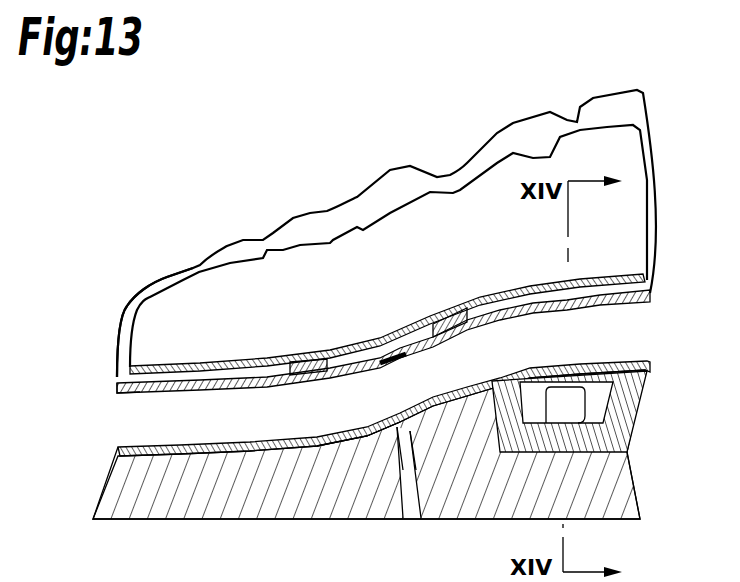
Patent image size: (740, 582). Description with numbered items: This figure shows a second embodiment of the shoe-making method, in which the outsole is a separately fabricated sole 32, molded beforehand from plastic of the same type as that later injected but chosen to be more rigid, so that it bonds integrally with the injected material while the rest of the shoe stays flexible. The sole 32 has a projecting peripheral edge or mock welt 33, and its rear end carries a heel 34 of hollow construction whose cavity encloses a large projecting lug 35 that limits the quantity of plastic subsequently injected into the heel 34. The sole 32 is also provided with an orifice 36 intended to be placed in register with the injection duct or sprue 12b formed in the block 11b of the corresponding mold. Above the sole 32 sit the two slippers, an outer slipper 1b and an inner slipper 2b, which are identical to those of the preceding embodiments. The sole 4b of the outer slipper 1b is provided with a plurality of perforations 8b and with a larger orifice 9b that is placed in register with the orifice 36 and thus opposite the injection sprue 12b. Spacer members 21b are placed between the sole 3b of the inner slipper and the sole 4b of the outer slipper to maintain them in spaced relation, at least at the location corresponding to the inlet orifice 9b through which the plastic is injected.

The outer slipper 1b is at (194, 264).
The inner slipper 2b is at (137, 268).
The sole of inner slipper 3b is at (206, 366).
The sole of outer slipper 4b is at (122, 398).
The perforations 8b is at (230, 390).
The orifice 9b is at (390, 358).
The block 11b is at (127, 495).
The injection sprue 12b is at (417, 503).
The spacer members 21b is at (313, 360).
The sole 32 is at (363, 437).
The mock welt 33 is at (178, 447).
The heel 34 is at (630, 400).
The projecting lug 35 is at (570, 397).
The orifice 36 is at (403, 424).